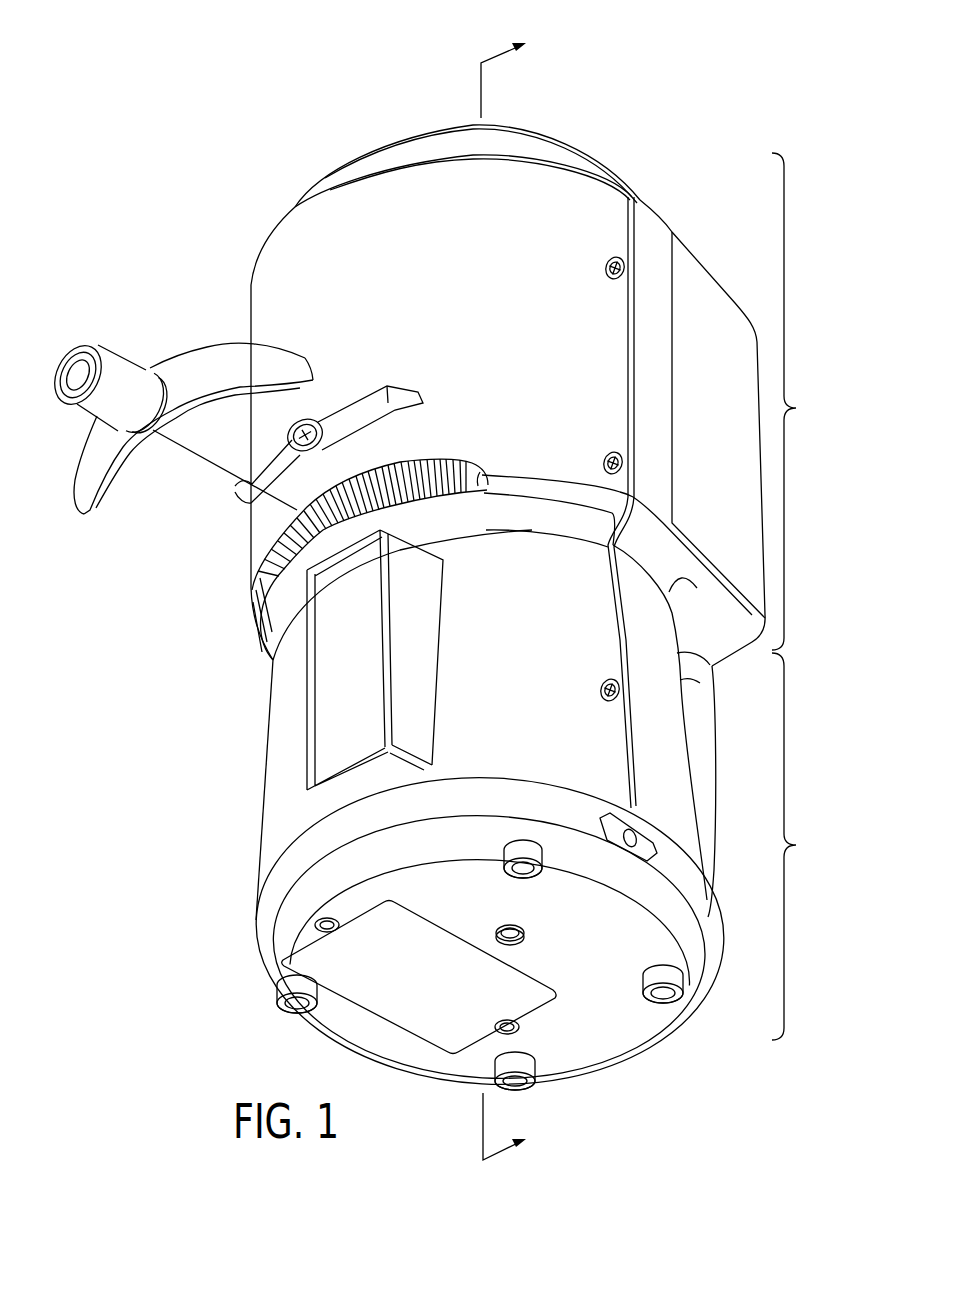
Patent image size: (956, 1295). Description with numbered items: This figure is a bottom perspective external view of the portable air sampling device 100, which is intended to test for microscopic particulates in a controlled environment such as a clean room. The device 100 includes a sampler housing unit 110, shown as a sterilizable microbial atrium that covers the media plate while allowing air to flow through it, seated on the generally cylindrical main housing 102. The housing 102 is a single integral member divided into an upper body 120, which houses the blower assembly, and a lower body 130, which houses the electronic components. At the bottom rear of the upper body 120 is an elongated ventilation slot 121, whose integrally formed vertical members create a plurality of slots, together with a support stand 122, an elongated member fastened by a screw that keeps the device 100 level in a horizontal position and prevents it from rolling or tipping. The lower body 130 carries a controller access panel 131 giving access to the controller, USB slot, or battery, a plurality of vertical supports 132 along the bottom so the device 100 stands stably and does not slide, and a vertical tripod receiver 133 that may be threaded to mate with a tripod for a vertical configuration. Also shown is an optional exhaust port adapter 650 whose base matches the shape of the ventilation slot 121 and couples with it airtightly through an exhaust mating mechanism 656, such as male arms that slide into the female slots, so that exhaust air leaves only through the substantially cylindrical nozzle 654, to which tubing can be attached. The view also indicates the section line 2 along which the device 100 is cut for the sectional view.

The air sampling device 100 is at (156, 126).
The section line 2- 2 is at (514, 594).
The main body or housing 102 is at (706, 264).
The sampler housing unit 110 is at (586, 131).
The upper body 120 is at (546, 480).
The elongated ventilation slot 121 is at (250, 594).
The support stand 122 is at (327, 407).
The lower body 130 is at (545, 813).
The controller access panel 131 is at (419, 977).
The vertical supports 132 is at (645, 1004).
The vertical tripod receiver 133 is at (527, 935).
The exhaust port adapter 650 is at (73, 527).
The nozzle 654 is at (113, 360).
The exhaust mating mechanism 656 is at (177, 420).